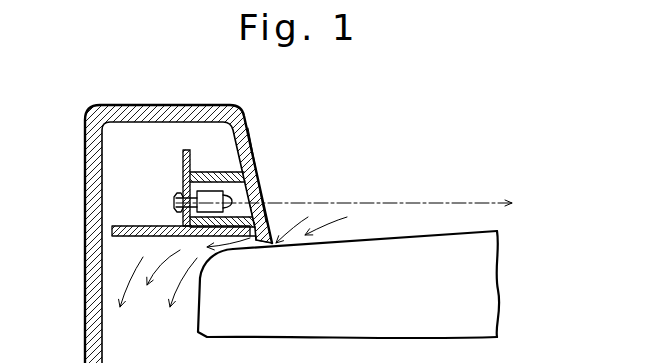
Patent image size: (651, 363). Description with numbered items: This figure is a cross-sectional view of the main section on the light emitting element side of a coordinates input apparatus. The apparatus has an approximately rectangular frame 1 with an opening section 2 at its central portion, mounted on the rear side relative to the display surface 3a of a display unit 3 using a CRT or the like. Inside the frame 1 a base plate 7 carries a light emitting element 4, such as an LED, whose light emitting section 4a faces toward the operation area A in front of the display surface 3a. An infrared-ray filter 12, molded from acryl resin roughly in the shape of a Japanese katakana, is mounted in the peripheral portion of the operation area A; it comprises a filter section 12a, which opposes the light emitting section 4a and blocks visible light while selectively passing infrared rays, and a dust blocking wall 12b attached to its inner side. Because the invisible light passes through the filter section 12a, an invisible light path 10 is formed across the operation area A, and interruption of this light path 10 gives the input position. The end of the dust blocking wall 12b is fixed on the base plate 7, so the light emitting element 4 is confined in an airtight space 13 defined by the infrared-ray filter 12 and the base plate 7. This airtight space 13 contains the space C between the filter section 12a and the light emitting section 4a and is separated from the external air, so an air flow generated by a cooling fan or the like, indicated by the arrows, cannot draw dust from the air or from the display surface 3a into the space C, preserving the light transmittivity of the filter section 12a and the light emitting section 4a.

The frame 1 is at (85, 152).
The opening section 2 is at (375, 153).
The display unit 3 is at (500, 298).
The display surface 3a is at (487, 229).
The light emitting element 4 is at (182, 185).
The light emitting section 4a is at (257, 168).
The base plate 7 is at (182, 156).
The light path 10 is at (390, 201).
The infrared-ray filter 12 is at (263, 192).
The filter section 12a is at (265, 208).
The dust blocking wall 12b is at (216, 178).
The airtight space 13 is at (203, 176).
The operation area A is at (460, 201).
The space C is at (262, 178).